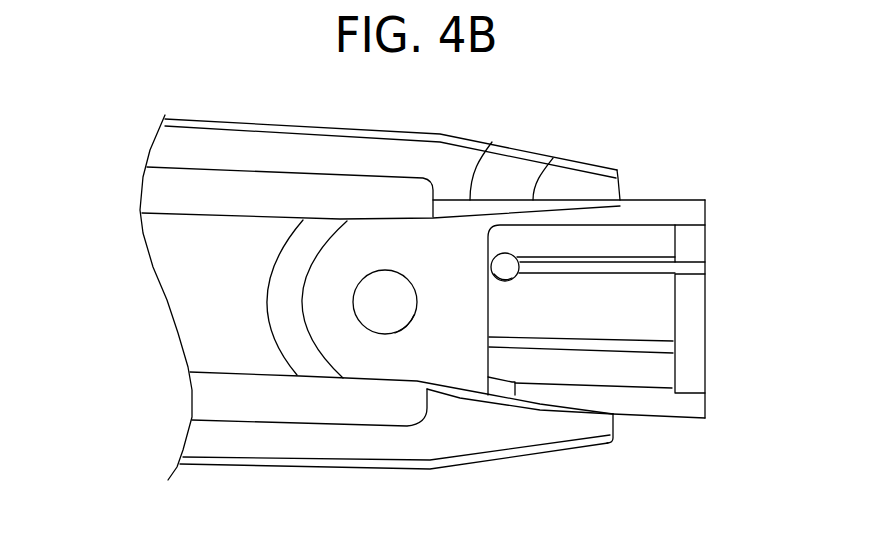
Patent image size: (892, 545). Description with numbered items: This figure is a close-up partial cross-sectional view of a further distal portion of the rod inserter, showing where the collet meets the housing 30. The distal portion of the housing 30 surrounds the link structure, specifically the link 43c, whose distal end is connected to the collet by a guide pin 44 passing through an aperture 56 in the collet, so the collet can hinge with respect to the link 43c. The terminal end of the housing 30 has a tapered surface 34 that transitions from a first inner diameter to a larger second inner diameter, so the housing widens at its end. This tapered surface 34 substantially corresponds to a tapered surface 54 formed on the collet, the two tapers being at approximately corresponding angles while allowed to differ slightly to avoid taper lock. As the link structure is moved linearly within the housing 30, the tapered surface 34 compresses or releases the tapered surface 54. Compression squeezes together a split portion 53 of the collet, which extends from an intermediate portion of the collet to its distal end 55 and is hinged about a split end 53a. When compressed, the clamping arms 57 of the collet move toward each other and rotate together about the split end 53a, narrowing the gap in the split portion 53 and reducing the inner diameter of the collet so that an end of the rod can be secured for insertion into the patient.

The housing 30 is at (270, 122).
The tapered surface 34 is at (490, 143).
The tapered surface 54 is at (553, 158).
The distal end 55 is at (677, 200).
The clamping arms 57 is at (703, 317).
The link 43c is at (197, 281).
The guide pin 44 is at (400, 287).
The aperture 56 is at (403, 327).
The split portion 53 is at (610, 277).
The split end 53a is at (512, 283).